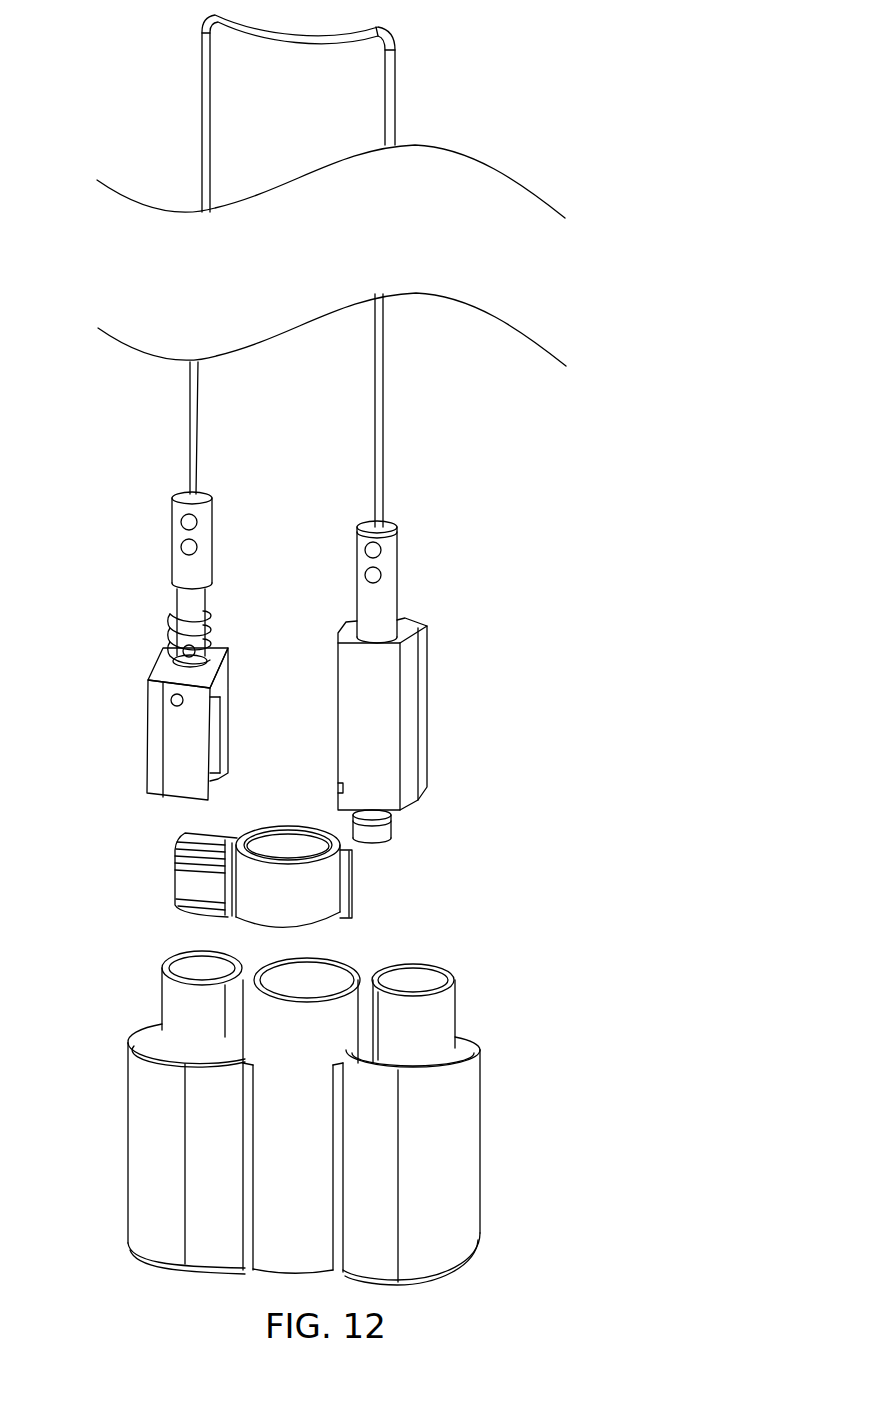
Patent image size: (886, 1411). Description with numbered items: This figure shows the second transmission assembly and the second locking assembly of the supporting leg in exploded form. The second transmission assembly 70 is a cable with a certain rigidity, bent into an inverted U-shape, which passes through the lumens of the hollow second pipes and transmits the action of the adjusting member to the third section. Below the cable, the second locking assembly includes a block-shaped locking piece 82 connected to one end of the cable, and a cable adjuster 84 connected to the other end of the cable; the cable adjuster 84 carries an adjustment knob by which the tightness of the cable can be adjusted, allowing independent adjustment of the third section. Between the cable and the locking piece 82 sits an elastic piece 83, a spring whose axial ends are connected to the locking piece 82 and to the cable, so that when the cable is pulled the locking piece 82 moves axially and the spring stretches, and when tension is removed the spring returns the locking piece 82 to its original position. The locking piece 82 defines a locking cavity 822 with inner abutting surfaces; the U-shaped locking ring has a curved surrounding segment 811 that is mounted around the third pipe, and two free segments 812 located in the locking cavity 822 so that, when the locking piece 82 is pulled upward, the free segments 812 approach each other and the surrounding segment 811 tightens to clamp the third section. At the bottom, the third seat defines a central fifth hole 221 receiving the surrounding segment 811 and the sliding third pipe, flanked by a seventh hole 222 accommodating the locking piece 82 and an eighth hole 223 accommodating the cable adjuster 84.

The second transmission assembly 70 is at (383, 410).
The elastic piece 83 is at (177, 623).
The locking piece 82 is at (174, 724).
The slot of insulating block 822 is at (217, 740).
The cable adjuster 84 is at (378, 723).
The surrounding segment 811 is at (283, 874).
The free segments 812 is at (193, 890).
The fifth hole 221 is at (300, 980).
The seventh hole 222 is at (420, 976).
The eighth hole 223 is at (193, 967).